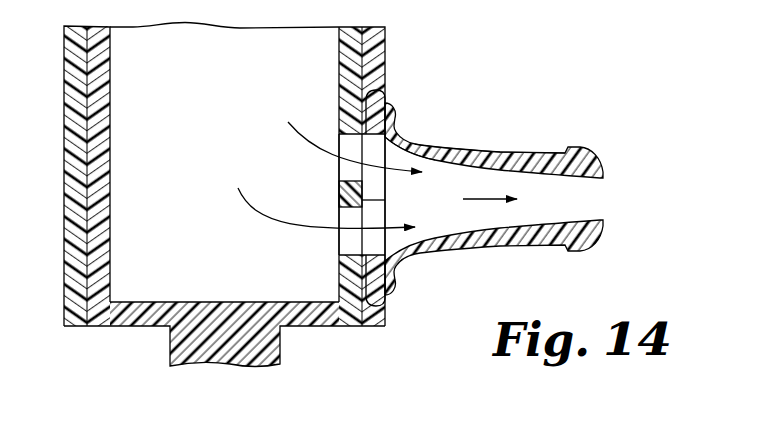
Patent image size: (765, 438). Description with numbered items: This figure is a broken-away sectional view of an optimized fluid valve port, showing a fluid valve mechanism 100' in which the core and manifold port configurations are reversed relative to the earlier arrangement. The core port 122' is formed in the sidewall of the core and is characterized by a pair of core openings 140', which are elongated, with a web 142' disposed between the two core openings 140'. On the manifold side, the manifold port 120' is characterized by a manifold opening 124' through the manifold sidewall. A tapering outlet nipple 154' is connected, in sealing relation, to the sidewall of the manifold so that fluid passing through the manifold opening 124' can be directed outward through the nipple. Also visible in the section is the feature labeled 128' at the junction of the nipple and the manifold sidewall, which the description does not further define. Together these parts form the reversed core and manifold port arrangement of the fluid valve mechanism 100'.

The fluid valve mechanism 100' is at (484, 165).
The manifold port 120' is at (494, 199).
The core port 122' is at (333, 158).
The manifold opening 124' is at (414, 121).
The retaining flange 128' is at (407, 166).
The core openings 140' is at (330, 175).
The web 142' is at (452, 192).
The tapering outlet nipple 154' is at (490, 123).